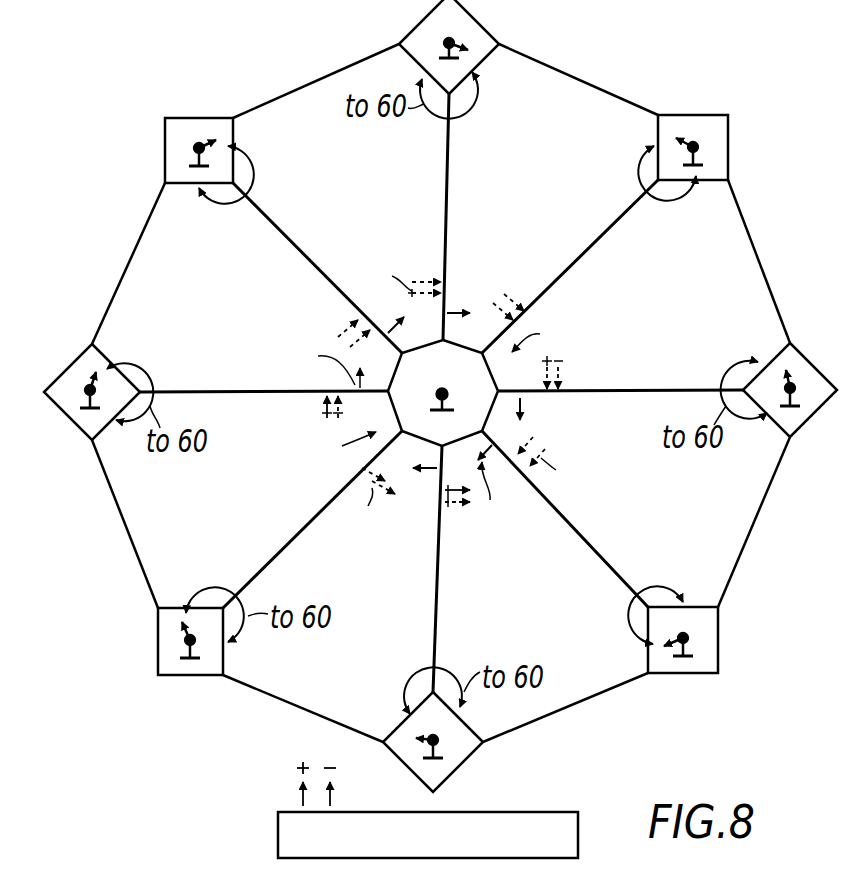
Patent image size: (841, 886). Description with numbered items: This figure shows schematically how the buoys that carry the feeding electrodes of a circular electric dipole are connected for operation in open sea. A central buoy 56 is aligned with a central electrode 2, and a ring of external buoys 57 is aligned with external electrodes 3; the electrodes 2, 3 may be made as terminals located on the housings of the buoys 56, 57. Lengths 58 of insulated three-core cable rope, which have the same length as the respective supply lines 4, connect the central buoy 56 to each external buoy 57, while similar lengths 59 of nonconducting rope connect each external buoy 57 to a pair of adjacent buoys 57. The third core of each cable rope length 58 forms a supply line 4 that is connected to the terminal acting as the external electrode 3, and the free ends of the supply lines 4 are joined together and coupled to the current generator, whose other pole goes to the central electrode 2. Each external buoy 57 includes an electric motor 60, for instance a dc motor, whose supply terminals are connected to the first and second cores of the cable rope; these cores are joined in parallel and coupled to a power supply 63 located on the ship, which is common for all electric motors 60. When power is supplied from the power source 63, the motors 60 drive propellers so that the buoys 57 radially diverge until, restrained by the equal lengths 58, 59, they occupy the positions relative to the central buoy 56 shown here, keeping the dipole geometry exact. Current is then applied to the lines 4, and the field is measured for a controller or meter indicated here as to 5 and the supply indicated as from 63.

The central electrode 2 is at (448, 398).
The external electrode 3 is at (194, 153).
The supply line 4 is at (482, 84).
The controller 5 is at (426, 421).
The buoy 56 is at (465, 345).
The buoy 57 is at (475, 33).
The length of insulated three-core cable rope 58 is at (312, 252).
The length of nonconducting rope 59 is at (330, 76).
The electric motor 60 is at (428, 835).
The power supply 63 is at (472, 563).